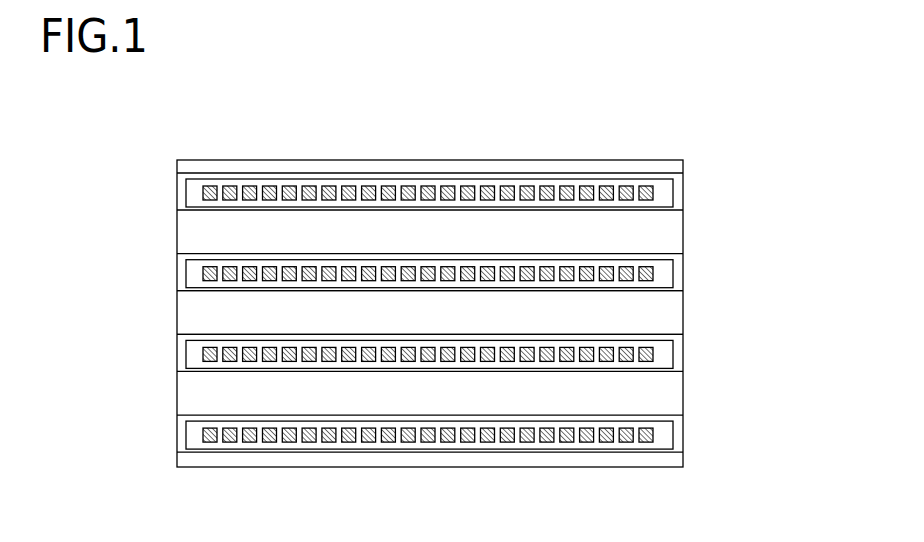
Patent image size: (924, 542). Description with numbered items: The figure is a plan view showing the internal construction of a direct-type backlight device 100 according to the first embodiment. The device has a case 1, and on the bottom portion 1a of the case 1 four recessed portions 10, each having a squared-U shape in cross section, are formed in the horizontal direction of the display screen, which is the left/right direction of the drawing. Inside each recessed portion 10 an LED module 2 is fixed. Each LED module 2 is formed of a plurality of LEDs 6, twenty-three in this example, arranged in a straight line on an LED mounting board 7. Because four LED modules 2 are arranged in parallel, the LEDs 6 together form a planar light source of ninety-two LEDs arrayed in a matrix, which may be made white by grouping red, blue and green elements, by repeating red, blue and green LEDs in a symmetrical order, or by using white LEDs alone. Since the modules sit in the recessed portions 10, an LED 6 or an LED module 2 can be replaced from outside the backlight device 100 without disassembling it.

The backlight device 100 is at (703, 388).
The case 1 is at (302, 160).
The bottom portion of the case 1a is at (672, 320).
The recessed portion 10 is at (170, 192).
The LED module 2 is at (479, 207).
The LED 6 is at (652, 192).
The LED mounting board 7 is at (662, 203).